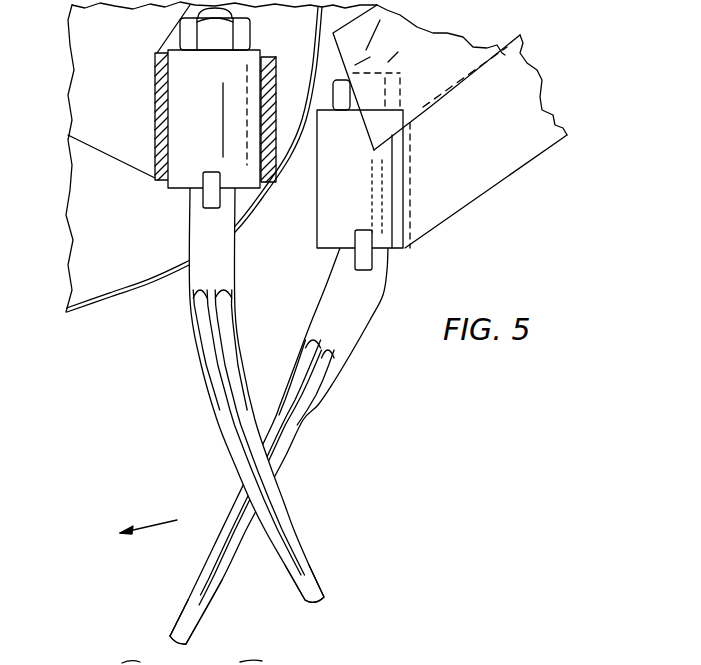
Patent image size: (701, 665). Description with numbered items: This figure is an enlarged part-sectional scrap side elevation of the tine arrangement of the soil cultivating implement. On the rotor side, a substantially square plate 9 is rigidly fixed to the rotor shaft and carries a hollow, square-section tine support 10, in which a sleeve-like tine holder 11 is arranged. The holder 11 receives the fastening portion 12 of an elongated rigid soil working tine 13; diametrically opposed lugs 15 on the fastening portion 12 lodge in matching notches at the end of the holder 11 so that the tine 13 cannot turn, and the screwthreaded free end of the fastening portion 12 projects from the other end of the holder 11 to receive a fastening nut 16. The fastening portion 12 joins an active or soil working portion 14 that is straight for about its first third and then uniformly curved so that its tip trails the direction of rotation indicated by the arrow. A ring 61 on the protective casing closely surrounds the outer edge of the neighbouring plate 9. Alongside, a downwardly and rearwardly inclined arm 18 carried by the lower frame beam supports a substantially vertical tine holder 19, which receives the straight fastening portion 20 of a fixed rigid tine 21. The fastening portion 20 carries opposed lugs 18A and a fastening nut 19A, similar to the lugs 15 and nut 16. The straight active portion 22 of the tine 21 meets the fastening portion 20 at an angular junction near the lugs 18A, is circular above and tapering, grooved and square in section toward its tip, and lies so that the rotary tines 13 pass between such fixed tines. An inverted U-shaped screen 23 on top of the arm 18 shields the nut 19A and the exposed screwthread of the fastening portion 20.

The plate 9 is at (87, 35).
The tine support 10 is at (157, 70).
The sleeve-like tine holder 11 is at (185, 102).
The fastening portion 12 is at (187, 10).
The soil working tine 13 is at (188, 332).
The active or soil working portion 14 is at (287, 517).
The lug 15 is at (205, 198).
The fastening nut 16 is at (242, 35).
The arm 18 is at (537, 143).
The lug 18A is at (358, 260).
The tine holder 19 is at (325, 203).
The fastening nut 19A is at (430, 78).
The fastening portion 20 is at (426, 77).
The rigid tine 21 is at (313, 415).
The active or soil working portion 22 is at (210, 603).
The screen 23 is at (450, 33).
The ring 61 is at (110, 297).